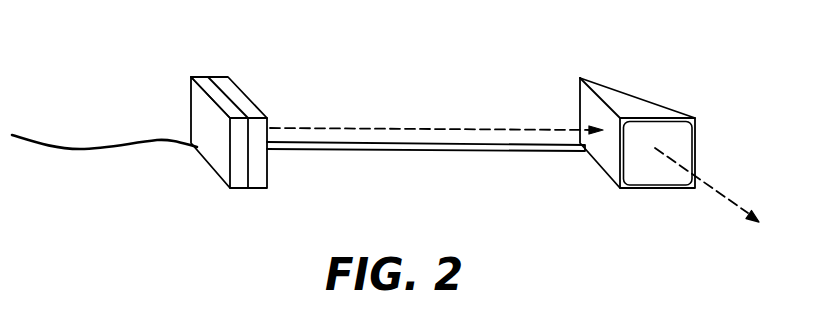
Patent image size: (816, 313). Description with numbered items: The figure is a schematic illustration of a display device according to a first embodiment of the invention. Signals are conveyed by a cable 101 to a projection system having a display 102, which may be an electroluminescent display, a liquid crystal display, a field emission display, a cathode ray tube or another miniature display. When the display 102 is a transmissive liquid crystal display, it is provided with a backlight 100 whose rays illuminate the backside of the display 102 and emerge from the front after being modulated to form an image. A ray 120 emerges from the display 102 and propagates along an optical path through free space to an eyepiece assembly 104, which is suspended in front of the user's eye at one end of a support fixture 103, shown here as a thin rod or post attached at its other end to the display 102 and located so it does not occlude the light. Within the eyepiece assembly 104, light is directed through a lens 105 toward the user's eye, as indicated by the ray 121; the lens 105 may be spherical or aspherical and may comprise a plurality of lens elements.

The backlight 100 is at (215, 158).
The cable 101 is at (120, 146).
The display 102 is at (225, 80).
The support fixture 103 is at (412, 150).
The eyepiece assembly 104 is at (628, 107).
The lens 105 is at (642, 172).
The ray 120 is at (353, 125).
The ray 121 is at (714, 186).